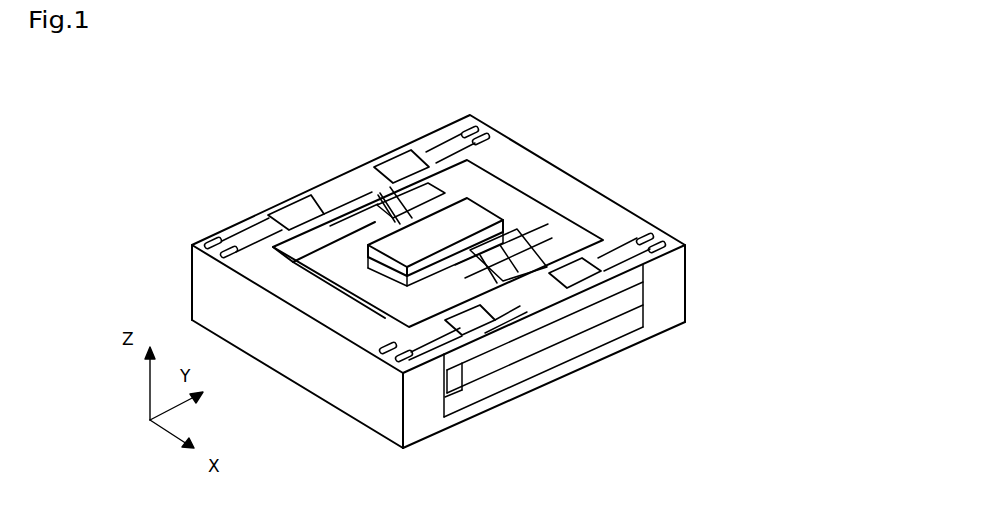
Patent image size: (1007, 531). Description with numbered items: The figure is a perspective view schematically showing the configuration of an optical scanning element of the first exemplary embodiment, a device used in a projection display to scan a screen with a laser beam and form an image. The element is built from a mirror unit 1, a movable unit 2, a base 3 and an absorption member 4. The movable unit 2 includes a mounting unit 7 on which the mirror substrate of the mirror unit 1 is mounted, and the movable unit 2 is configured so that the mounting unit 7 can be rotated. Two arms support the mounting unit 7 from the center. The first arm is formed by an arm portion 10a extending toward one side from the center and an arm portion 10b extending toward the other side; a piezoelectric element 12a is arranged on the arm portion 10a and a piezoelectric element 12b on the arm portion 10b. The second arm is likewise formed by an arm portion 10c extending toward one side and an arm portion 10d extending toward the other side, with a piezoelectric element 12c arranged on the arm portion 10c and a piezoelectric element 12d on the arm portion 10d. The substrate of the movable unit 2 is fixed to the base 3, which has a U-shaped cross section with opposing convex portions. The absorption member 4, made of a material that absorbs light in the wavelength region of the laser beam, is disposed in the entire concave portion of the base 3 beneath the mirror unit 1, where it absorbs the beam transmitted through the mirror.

The mirror unit 1 is at (488, 229).
The movable unit 2 is at (620, 200).
The base 3 is at (678, 285).
The absorption member 4 is at (458, 398).
The mounting unit 7 is at (503, 240).
The arm portion 10a is at (562, 290).
The arm portion 10b is at (455, 338).
The arm portion 10c is at (413, 140).
The arm portion 10d is at (290, 215).
The piezoelectric element 12a is at (585, 272).
The piezoelectric element 12b is at (476, 321).
The piezoelectric element 12c is at (395, 156).
The piezoelectric element 12d is at (300, 212).